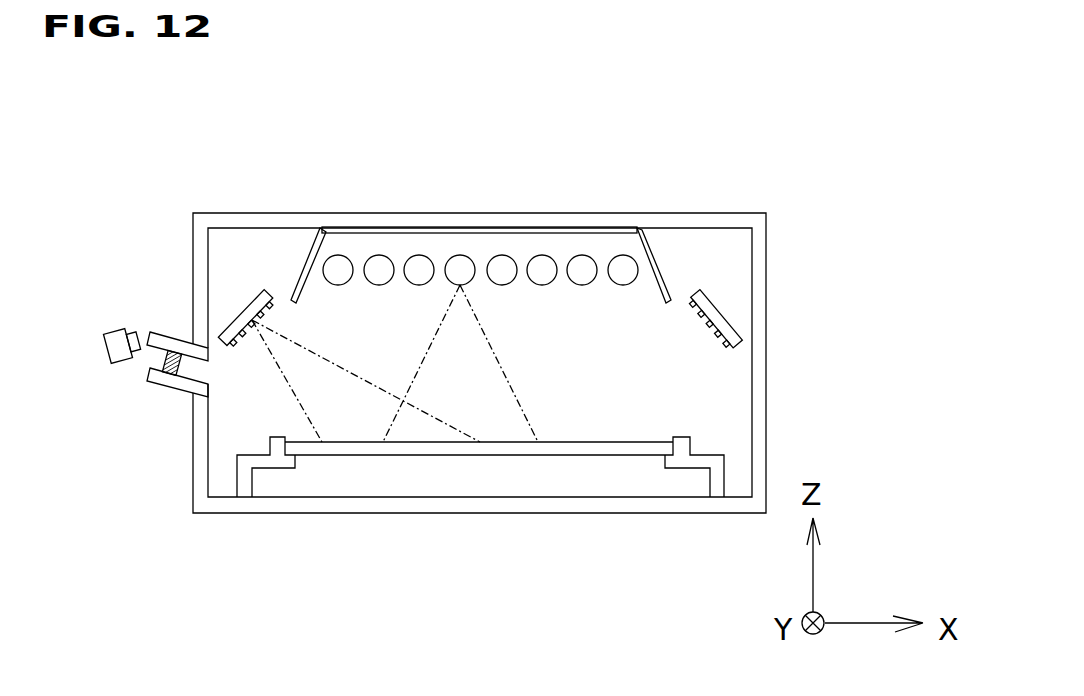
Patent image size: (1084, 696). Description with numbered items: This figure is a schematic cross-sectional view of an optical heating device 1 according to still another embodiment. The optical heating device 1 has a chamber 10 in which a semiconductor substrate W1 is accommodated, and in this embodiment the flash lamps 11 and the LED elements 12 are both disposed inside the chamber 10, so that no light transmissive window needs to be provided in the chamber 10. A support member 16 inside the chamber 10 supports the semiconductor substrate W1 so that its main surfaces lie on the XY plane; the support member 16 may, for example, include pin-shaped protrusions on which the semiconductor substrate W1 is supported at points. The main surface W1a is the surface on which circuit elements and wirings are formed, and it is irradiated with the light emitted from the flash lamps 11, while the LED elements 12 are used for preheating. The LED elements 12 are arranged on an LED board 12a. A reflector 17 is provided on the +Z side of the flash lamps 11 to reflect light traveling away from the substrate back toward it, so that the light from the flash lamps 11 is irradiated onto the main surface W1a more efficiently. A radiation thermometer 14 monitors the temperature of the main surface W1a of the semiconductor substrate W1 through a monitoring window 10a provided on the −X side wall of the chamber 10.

The optical heating device 1 is at (132, 160).
The chamber 10 is at (162, 508).
The monitoring window 10a is at (167, 383).
The flash lamps 11 is at (330, 258).
The LED elements 12 is at (411, 262).
The LED board 12a is at (257, 298).
The radiation thermometer 14 is at (117, 333).
The support member 16 is at (688, 462).
The reflector 17 is at (532, 230).
The semiconductor substrate W1 is at (575, 434).
The main surface W1a is at (655, 440).